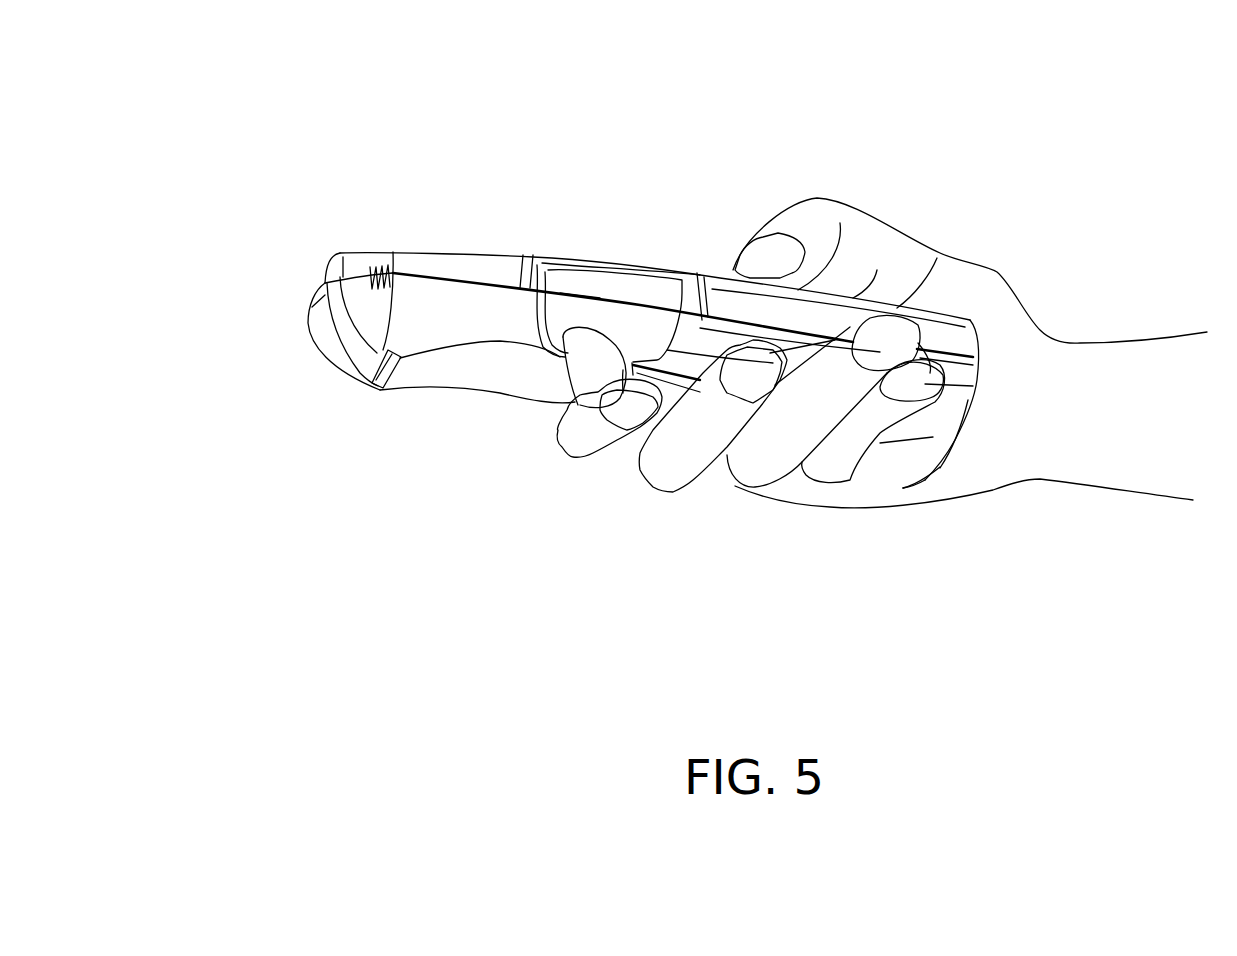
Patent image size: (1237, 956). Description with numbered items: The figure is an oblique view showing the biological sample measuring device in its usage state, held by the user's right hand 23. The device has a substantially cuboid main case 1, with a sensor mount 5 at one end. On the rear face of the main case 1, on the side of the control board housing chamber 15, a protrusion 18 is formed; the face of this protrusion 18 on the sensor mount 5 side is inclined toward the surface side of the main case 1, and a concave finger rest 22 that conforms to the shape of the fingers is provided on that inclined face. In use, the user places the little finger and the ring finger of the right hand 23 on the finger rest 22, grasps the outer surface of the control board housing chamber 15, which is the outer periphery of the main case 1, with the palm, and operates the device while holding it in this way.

The main case 1 is at (534, 248).
The sensor mount 5 is at (323, 291).
The control board housing chamber 15 is at (820, 318).
The protrusion 18 is at (903, 455).
The finger rest 22 is at (838, 417).
The right hand 23 is at (1007, 417).